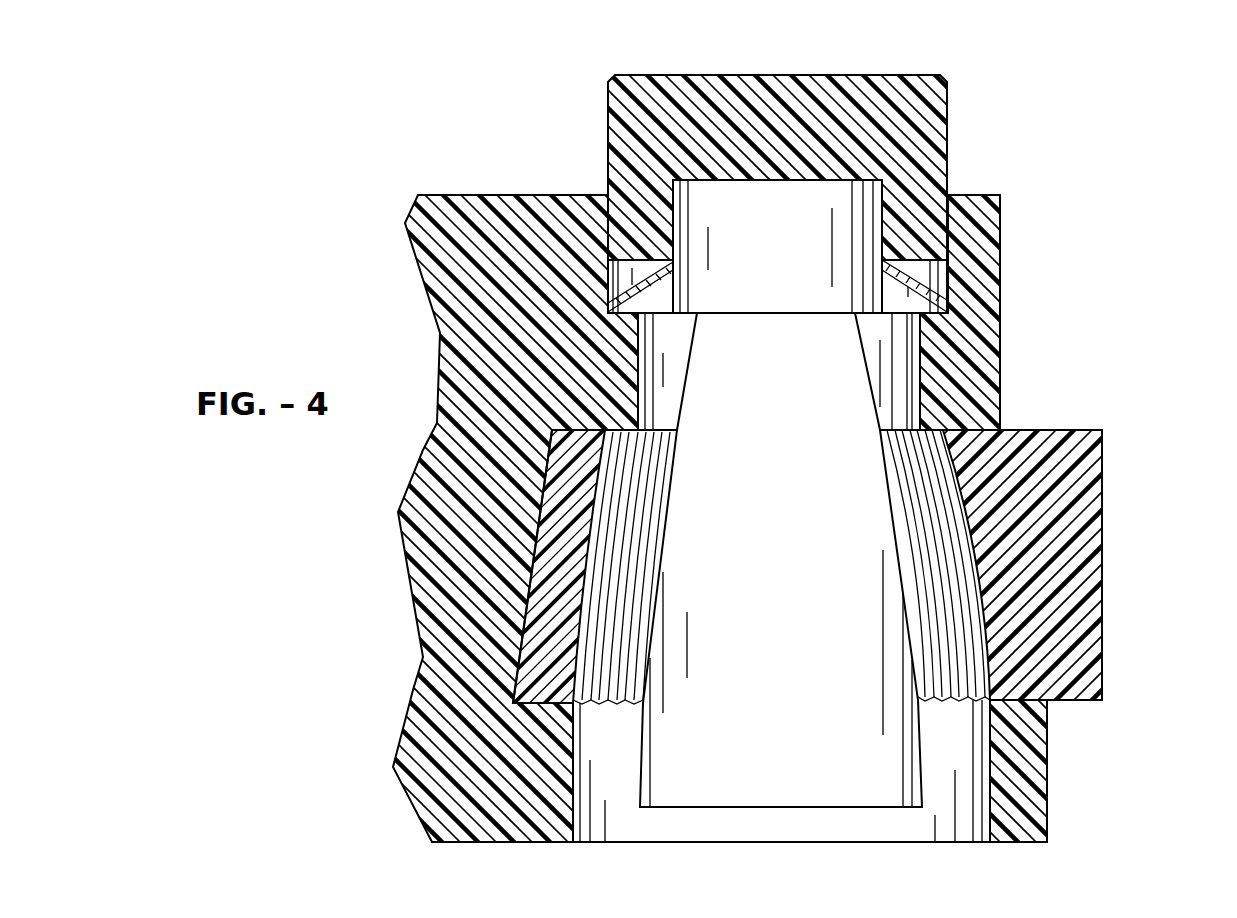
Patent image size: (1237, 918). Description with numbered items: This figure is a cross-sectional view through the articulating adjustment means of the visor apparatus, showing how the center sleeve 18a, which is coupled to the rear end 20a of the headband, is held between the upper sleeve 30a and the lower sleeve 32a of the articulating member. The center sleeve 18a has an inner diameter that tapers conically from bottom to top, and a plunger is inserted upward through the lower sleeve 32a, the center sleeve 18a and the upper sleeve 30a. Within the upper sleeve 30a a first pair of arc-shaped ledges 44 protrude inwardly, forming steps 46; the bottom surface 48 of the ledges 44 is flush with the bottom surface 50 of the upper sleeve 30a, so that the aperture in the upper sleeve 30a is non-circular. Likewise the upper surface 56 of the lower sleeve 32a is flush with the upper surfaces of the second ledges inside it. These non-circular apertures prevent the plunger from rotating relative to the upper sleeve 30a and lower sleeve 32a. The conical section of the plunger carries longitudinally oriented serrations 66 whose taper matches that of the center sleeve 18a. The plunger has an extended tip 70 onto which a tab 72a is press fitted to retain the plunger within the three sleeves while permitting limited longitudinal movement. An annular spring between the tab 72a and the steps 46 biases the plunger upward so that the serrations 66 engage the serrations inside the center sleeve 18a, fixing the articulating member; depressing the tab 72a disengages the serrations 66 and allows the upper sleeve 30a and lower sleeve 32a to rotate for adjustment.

The center sleeve 18a is at (553, 570).
The rear end of head band 20a is at (1103, 490).
The upper sleeve 30a is at (1003, 238).
The lower sleeve 32a is at (1047, 758).
The first pair of arc-shaped ledges 44 is at (640, 387).
The steps 46 is at (640, 317).
The bottom surface of ledges 48 is at (670, 433).
The bottom surface of upper sleeve 50 is at (580, 440).
The upper surface of lower sleeve 56 is at (533, 705).
The serrations 66 is at (633, 553).
The extended tip 70 is at (752, 208).
The tab 72a is at (873, 75).